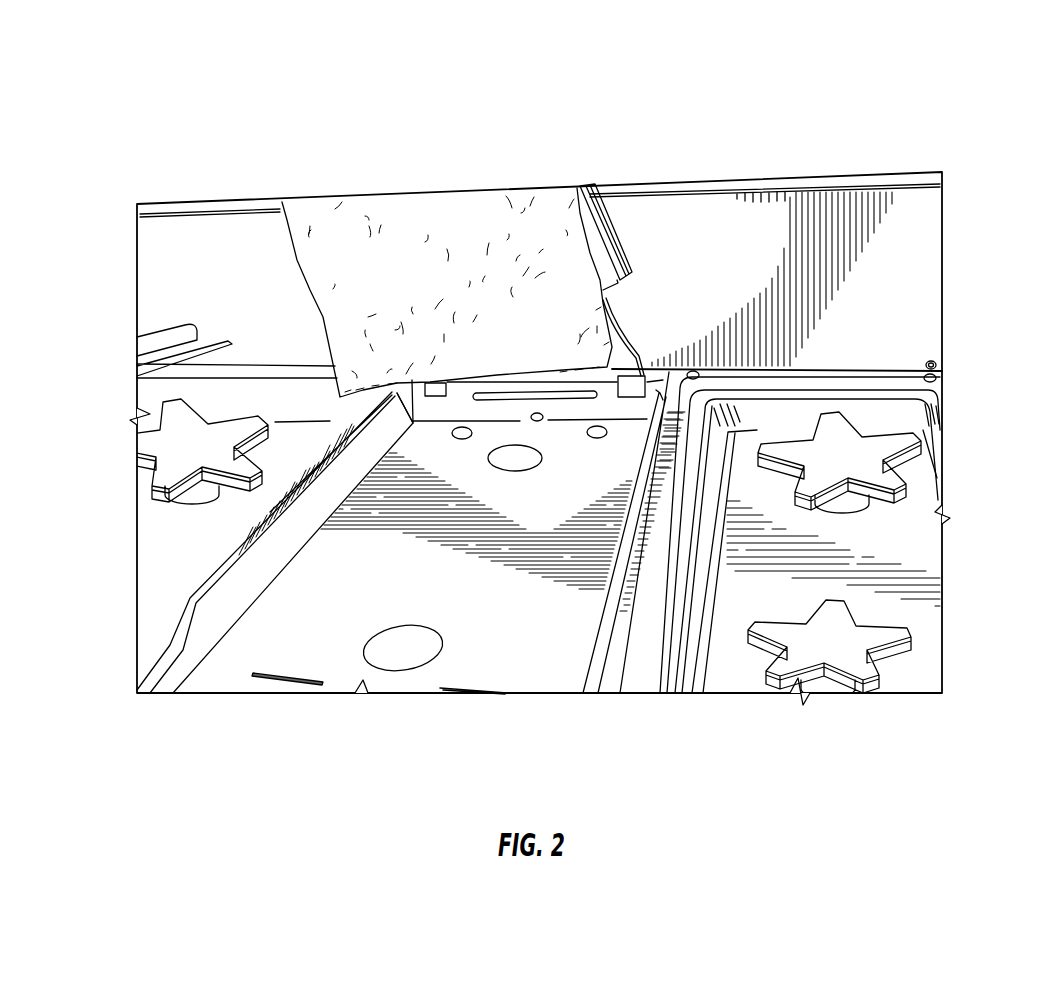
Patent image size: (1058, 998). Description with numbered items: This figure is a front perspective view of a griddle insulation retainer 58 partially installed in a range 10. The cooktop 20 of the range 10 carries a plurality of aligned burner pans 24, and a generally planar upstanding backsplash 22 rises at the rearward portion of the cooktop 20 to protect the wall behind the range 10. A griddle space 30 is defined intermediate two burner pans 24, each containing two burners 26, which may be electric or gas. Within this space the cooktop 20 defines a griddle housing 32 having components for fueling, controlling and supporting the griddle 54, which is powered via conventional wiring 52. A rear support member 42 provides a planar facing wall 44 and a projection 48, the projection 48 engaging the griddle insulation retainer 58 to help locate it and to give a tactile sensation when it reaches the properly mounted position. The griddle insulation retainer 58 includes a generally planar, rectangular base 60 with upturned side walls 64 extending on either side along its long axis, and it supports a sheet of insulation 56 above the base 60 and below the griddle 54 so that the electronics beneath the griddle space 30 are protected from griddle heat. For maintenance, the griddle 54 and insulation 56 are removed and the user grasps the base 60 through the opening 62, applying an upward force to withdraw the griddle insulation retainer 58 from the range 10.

The range 10 is at (714, 106).
The cooktop 20 is at (165, 588).
The backsplash 22 is at (913, 220).
The burner pan 24 is at (752, 586).
The burner 26 is at (835, 650).
The griddle space 30 is at (608, 672).
The griddle housing 32 is at (658, 328).
The rear support member 42 is at (665, 377).
The planar facing wall 44 is at (453, 410).
The projection 48 is at (543, 415).
The wiring 52 is at (615, 318).
The griddle 54 is at (600, 243).
The insulation 56 is at (463, 218).
The griddle insulation retainer 58 is at (240, 693).
The base 60 is at (340, 621).
The opening 62 is at (415, 643).
The side wall 64 is at (197, 633).